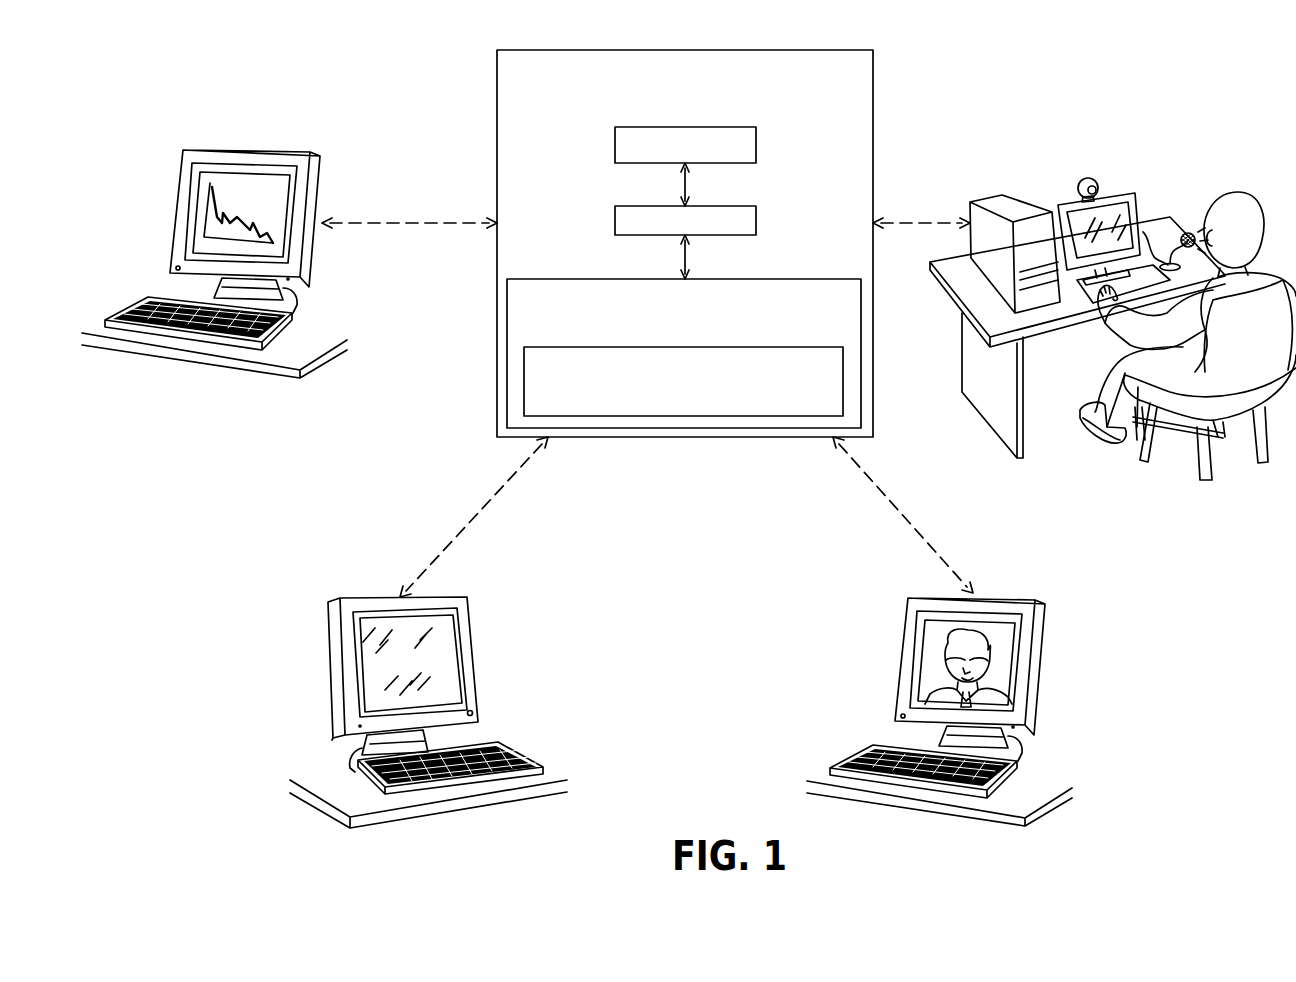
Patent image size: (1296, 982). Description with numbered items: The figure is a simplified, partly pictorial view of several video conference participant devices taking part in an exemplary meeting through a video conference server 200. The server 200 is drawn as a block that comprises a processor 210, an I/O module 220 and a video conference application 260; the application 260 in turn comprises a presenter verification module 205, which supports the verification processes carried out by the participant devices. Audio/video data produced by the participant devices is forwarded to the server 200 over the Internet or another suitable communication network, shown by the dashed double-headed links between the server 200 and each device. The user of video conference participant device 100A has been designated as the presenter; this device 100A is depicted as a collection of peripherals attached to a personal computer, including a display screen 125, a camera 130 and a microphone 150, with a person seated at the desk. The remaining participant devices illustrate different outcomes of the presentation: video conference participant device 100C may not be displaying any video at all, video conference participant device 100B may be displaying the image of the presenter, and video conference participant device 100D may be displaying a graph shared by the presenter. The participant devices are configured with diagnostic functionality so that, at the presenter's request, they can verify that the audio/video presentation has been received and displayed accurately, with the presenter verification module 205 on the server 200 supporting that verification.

The video conference participant device 100A is at (1113, 286).
The video conference participant device 100B is at (1045, 628).
The video conference participant device 100C is at (328, 630).
The video conference participant device 100D is at (320, 180).
The display device 125 is at (1080, 217).
The camera 130 is at (1088, 178).
The microphone 150 is at (1189, 232).
The video conference server 200 is at (497, 63).
The presenter verification module 205 is at (523, 385).
The processor 210 is at (615, 211).
The I/O module 220 is at (615, 137).
The video conference application 260 is at (507, 335).